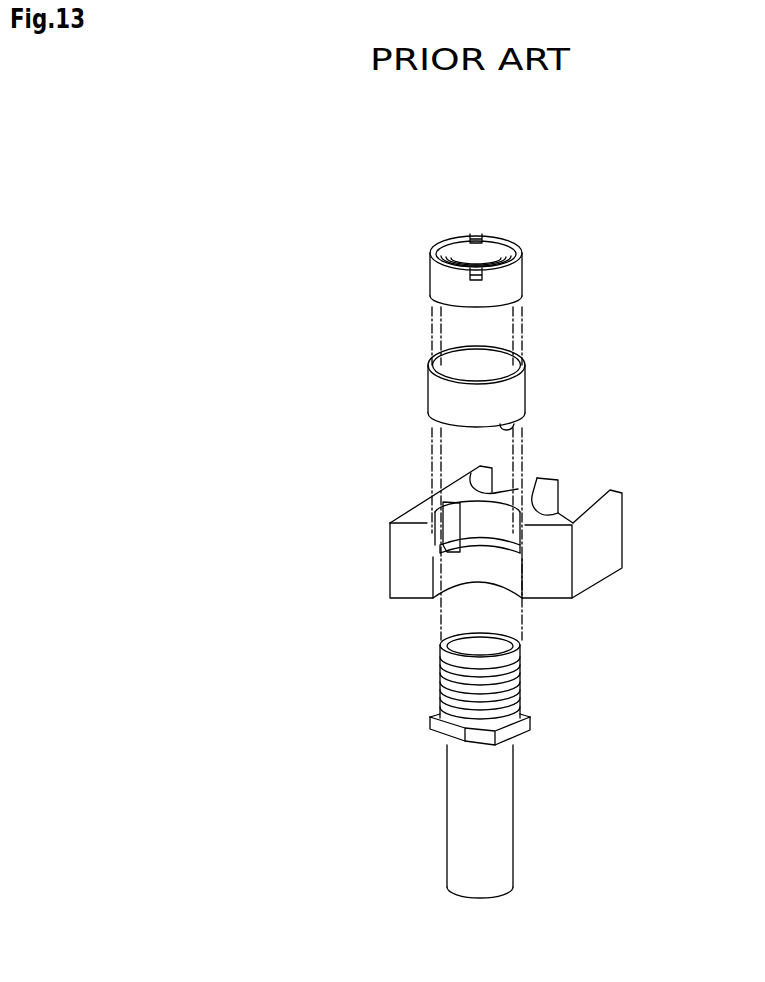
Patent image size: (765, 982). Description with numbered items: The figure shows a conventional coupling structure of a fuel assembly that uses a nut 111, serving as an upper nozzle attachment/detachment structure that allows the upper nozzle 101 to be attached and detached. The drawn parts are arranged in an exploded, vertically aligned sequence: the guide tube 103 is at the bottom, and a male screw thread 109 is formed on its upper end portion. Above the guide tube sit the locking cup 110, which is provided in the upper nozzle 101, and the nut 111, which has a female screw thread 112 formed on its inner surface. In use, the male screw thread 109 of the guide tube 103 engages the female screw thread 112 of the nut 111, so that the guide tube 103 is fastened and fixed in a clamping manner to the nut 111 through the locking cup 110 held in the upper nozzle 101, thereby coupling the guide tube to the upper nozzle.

The upper nozzle 101 is at (400, 557).
The guide tube 103 is at (545, 797).
The male screw thread 109 is at (520, 677).
The locking cup 110 is at (513, 398).
The nut 111 is at (513, 281).
The female screw thread 112 is at (462, 245).